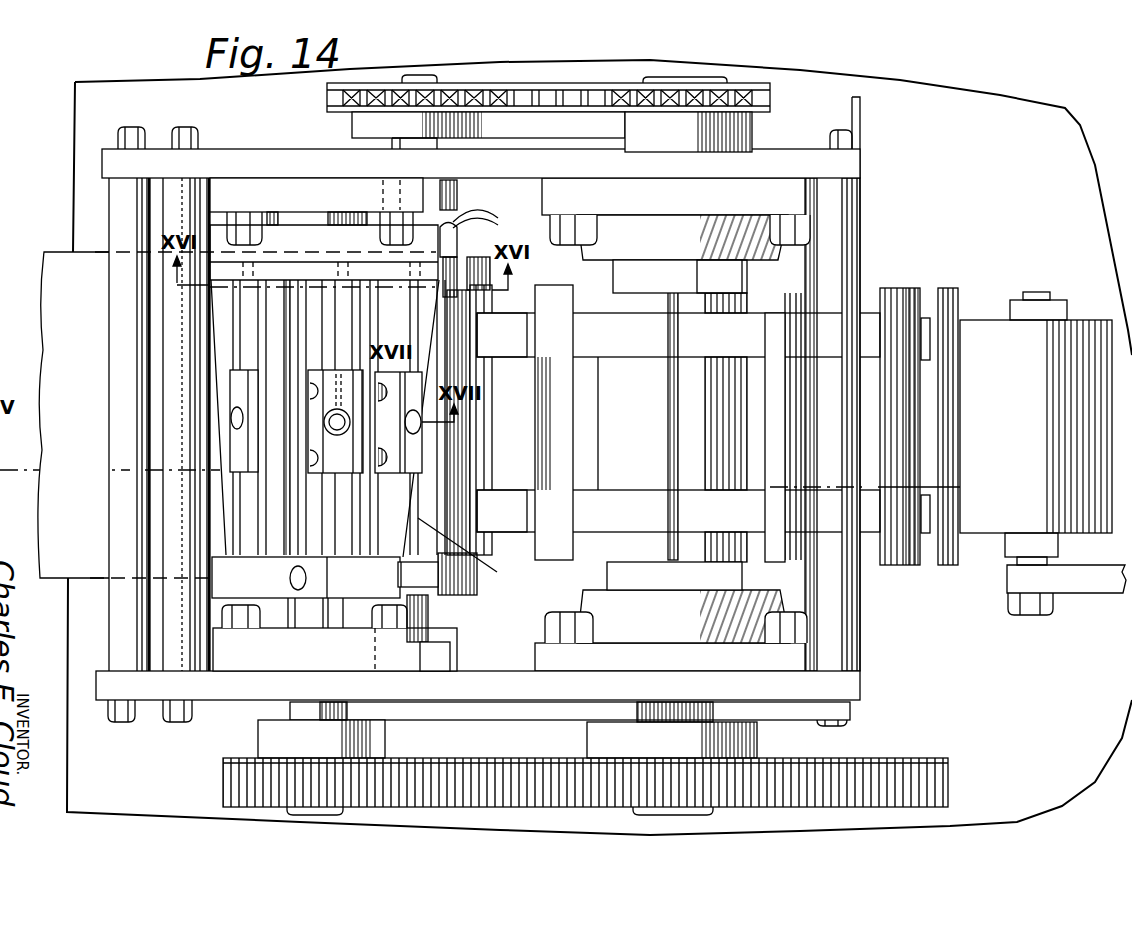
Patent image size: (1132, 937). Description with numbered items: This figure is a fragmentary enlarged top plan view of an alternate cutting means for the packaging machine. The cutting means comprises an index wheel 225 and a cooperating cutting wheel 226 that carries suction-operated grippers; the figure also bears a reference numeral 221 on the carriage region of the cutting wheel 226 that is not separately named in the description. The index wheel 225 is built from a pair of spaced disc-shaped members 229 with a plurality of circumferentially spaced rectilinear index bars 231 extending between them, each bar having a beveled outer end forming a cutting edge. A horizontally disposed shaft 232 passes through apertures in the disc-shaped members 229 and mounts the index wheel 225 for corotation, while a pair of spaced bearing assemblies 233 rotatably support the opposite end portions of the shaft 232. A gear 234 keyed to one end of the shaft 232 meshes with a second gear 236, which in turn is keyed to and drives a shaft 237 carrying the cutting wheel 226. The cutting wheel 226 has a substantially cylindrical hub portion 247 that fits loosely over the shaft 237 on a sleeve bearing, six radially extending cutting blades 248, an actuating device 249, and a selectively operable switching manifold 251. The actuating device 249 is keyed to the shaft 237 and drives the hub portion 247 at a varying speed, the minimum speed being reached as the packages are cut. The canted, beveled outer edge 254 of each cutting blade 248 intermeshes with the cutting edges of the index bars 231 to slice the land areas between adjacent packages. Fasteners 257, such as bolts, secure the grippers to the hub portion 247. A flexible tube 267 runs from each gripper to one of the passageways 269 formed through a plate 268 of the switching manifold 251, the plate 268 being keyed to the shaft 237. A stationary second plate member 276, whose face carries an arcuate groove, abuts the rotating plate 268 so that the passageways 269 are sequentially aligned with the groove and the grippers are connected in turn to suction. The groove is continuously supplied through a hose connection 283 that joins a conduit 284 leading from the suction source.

The carriage block 221 is at (338, 456).
The index wheel 225 is at (728, 537).
The cutting wheel 226 is at (212, 530).
The disc-shaped members 229 is at (633, 342).
The rectilinear index bars 231 is at (668, 430).
The shaft 232 is at (722, 306).
The bearing assemblies 233 is at (800, 207).
The gear 234 is at (793, 798).
The second gear 236 is at (372, 788).
The shaft 237 is at (300, 712).
The hub portion 247 is at (327, 530).
The cutting blades 248 is at (264, 577).
The actuating device 249 is at (253, 575).
The switching manifold 251 is at (222, 238).
The outer edge 254 is at (478, 554).
The fasteners 257 is at (462, 467).
The flexible tube 267 is at (412, 330).
The plate 268 is at (297, 272).
The passageways 269 is at (403, 274).
The second plate member 276 is at (308, 240).
The hose connection 283 is at (440, 218).
The conduit 284 is at (497, 222).